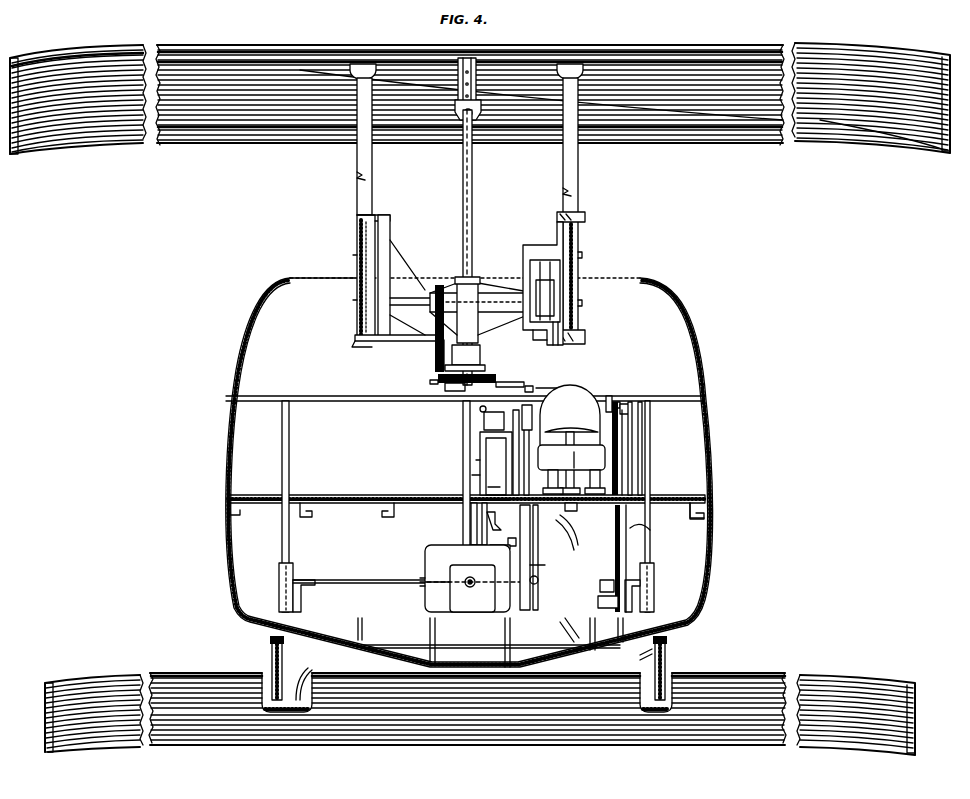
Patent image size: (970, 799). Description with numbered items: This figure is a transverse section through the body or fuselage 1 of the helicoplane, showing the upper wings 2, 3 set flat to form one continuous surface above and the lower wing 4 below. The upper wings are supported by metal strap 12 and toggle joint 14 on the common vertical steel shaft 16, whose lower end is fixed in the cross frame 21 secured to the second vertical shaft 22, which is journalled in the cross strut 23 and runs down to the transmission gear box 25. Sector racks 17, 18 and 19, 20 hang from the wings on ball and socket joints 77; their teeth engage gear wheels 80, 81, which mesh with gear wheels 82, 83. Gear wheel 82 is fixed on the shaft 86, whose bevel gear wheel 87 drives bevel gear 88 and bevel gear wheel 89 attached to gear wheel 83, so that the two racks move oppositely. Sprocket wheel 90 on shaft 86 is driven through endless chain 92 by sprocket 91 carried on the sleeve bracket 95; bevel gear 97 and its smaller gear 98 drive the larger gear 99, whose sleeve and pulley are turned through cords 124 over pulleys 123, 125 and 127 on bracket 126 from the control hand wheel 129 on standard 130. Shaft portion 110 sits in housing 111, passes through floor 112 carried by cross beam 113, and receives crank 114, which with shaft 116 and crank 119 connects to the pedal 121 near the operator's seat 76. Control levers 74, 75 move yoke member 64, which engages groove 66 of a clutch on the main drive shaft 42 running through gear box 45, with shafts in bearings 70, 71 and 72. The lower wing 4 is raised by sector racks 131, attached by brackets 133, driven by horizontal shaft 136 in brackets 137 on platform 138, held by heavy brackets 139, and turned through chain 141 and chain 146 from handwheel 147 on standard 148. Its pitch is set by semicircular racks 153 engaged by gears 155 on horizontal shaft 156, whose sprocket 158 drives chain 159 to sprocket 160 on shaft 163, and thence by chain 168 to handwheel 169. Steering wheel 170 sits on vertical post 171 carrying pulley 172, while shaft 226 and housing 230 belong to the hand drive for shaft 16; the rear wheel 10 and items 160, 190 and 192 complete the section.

The body or fuselage 1 is at (712, 528).
The upper wing 2 is at (88, 142).
The upper wing 3 is at (750, 52).
The lower wing 4 is at (510, 735).
The ball and socket joints 77 is at (358, 62).
The metal strap 12 is at (458, 62).
The toggle joint 14 is at (472, 118).
The vertical steel shaft 16 is at (472, 200).
The sector rack 17 is at (372, 172).
The sector rack 18 is at (578, 174).
The sector rack 19 is at (372, 200).
The sector rack 20 is at (563, 204).
The rear wheel 10 is at (580, 221).
The gear wheel 80 is at (357, 243).
The gear wheel 81 is at (578, 238).
The gear wheel 82 is at (357, 323).
The gear wheel 83 is at (582, 310).
The shaft 86 is at (400, 305).
The bevel gear wheel 87 is at (548, 284).
The bevel gear 88 is at (536, 341).
The bevel gear wheel 89 is at (559, 340).
The sprocket wheel 90 is at (460, 277).
The cross frame 21 is at (484, 312).
The sprocket 91 is at (436, 365).
The endless chain 92 is at (436, 340).
The sleeve bracket 95 is at (480, 356).
The bevel gear 97 is at (486, 370).
The smaller gear 98 is at (462, 391).
The larger gear 99 is at (432, 383).
The control hand wheel 129 is at (550, 390).
The handwheel 169 is at (615, 395).
The handwheel 147 is at (618, 402).
The cross strut 23 is at (396, 400).
The operator's seat 76 is at (570, 415).
The control lever 75 is at (532, 426).
The steering wheel 170 is at (575, 430).
The pulleys 127 is at (480, 420).
The vertical shaft 22 is at (463, 440).
The control lever 74 is at (519, 440).
The standard 130 is at (496, 463).
The standard 148 is at (632, 440).
The cords 124 is at (478, 460).
The pedal 121 is at (571, 457).
The vertical post 171 is at (576, 457).
The chain 146 is at (642, 463).
The housing 111 is at (482, 470).
The lower shaft portion 110 is at (498, 484).
The bracket 126 is at (560, 481).
The housing 230 is at (596, 481).
The chain 168 is at (624, 484).
The floor 112 is at (392, 495).
The cross beam 113 is at (316, 516).
The pulleys 123 is at (470, 517).
The pulley 172 is at (584, 509).
The pulleys 125 is at (690, 520).
The link 192 is at (648, 533).
The crank 114 is at (486, 520).
The circumferential groove 66 is at (512, 536).
The shaft 116 is at (530, 550).
The crank 119 is at (578, 540).
The chain 141 is at (628, 548).
The sector racks 131 is at (282, 545).
The yoke member 64 is at (470, 558).
The bearing 70 is at (482, 561).
The bearing 71 is at (547, 561).
The shaft 163 is at (615, 562).
The heavy brackets 139 is at (294, 572).
The horizontal shaft 136 is at (381, 579).
The shaft 226 is at (538, 580).
The brackets 137 is at (316, 591).
The transmission gear box 25 is at (430, 592).
The gear box 45 is at (450, 598).
The main drive shaft 42 is at (470, 588).
The bearing 72 is at (538, 597).
The sprocket 160 is at (599, 600).
The block 190 is at (598, 586).
The platform 138 is at (445, 618).
The horizontal shaft 156 is at (528, 645).
The chain 159 is at (590, 629).
The sprocket 158 is at (640, 657).
The gears 155 is at (270, 640).
The semicircular racks 153 is at (272, 660).
The brackets 133 is at (316, 676).